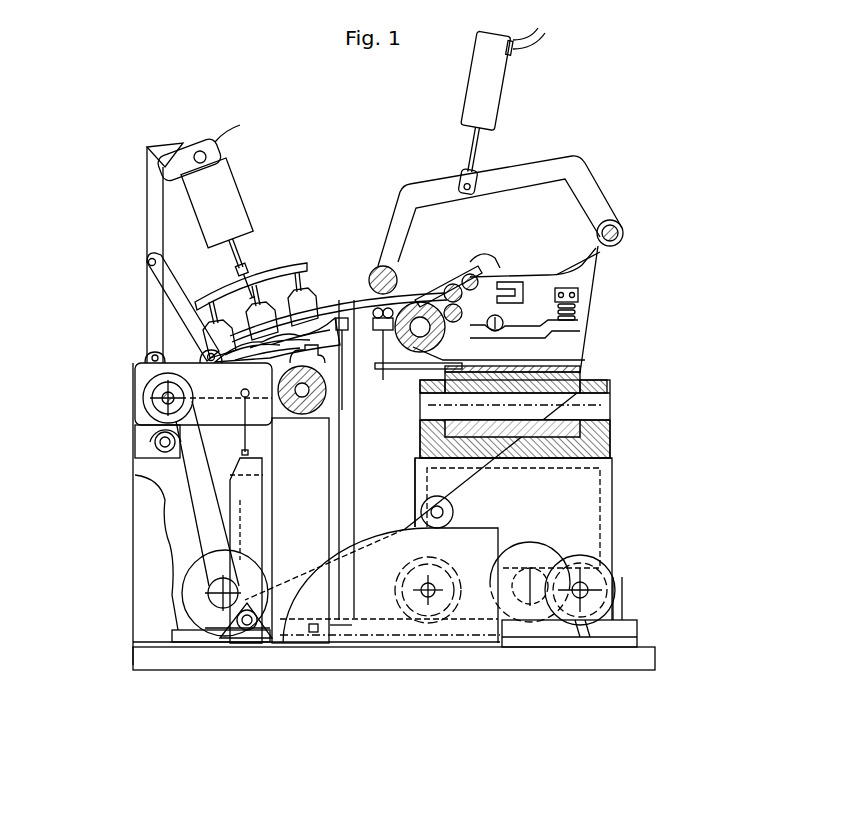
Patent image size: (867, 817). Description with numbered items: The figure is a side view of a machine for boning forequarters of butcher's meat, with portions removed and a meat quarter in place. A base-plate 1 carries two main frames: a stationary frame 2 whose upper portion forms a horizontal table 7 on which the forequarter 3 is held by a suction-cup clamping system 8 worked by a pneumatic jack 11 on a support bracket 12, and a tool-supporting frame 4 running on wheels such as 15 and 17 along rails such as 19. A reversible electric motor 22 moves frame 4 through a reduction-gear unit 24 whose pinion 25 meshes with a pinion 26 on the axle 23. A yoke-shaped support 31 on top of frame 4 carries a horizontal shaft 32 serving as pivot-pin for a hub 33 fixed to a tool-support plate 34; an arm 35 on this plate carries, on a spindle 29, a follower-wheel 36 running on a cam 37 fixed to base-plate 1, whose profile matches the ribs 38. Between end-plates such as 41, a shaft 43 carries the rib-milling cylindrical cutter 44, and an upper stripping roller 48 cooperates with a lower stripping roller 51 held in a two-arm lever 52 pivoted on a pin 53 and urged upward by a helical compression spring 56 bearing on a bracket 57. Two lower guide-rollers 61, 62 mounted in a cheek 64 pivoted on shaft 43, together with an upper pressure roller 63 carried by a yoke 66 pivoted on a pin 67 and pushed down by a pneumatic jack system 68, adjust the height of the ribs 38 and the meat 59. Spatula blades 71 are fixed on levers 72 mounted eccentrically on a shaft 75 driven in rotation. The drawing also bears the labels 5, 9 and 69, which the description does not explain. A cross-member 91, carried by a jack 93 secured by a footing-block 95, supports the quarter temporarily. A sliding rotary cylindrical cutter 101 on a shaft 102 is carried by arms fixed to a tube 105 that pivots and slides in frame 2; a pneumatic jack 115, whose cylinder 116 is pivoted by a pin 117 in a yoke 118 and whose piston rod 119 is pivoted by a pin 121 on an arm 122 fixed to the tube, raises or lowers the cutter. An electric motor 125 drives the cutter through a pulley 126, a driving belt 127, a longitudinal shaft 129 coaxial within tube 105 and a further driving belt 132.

The base-plate 1 is at (143, 658).
The frame 2 is at (172, 578).
The forequarter of meat 3 is at (333, 298).
The frame 4 is at (618, 490).
The support 5 is at (340, 627).
The table 7 is at (165, 340).
The suction-cup clamping system 8 is at (266, 270).
The guide 9 is at (308, 352).
The pneumatic jack 11 is at (216, 191).
The support bracket 12 is at (156, 222).
The wheel 15 is at (460, 590).
The wheel 17 is at (598, 596).
The rail 19 is at (627, 630).
The reversible electric motor 22 is at (513, 632).
The axle 23 is at (585, 588).
The reduction-gear unit 24 is at (528, 612).
The pinion 25 is at (538, 602).
The pinion 26 is at (586, 612).
The spindle 29 is at (640, 537).
The support 31 is at (412, 455).
The horizontal shaft 32 is at (612, 412).
The hub 33 is at (612, 436).
The tool-support plate 34 is at (612, 386).
The downwardly-extending arm 35 is at (433, 506).
The follower-wheel 36 is at (625, 518).
The cam 37 is at (390, 563).
The ribs 38 is at (313, 330).
The end-plate 41 is at (540, 293).
The shaft 43 is at (425, 307).
The rib-milling cylindrical cutter 44 is at (410, 342).
The upper stripping roller 48 is at (467, 275).
The lower stripping roller 51 is at (452, 322).
The two-arm lever 52 is at (592, 338).
The pin 53 is at (572, 362).
The helical compression spring 56 is at (582, 312).
The bracket 57 is at (592, 270).
The meat 59 is at (287, 335).
The lower guide-roller 61 is at (374, 318).
The lower guide-roller 62 is at (380, 328).
The upper pressure roller 63 is at (378, 270).
The cheek 64 is at (376, 366).
The yoke 66 is at (513, 180).
The pin 67 is at (623, 228).
The pneumatic jack system 68 is at (488, 80).
The rod 69 is at (388, 335).
The spatula blade 71 is at (445, 280).
The lever 72 is at (500, 280).
The shaft 75 is at (486, 255).
The cross-member 91 is at (342, 318).
The jack 93 is at (343, 530).
The footing-block 95 is at (314, 630).
The sliding rotary cylindrical cutter 101 is at (215, 400).
The shaft 102 is at (303, 406).
The tube 105 is at (142, 393).
The pneumatic jack 115 is at (232, 540).
The cylinder 116 is at (240, 510).
The pin 117 is at (248, 630).
The yoke 118 is at (232, 628).
The piston rod 119 is at (242, 432).
The pin 121 is at (268, 422).
The arm 122 is at (165, 362).
The electric motor 125 is at (214, 608).
The pulley 126 is at (205, 590).
The driving belt 127 is at (142, 578).
The longitudinal shaft 129 is at (176, 400).
The driving belt 132 is at (165, 433).